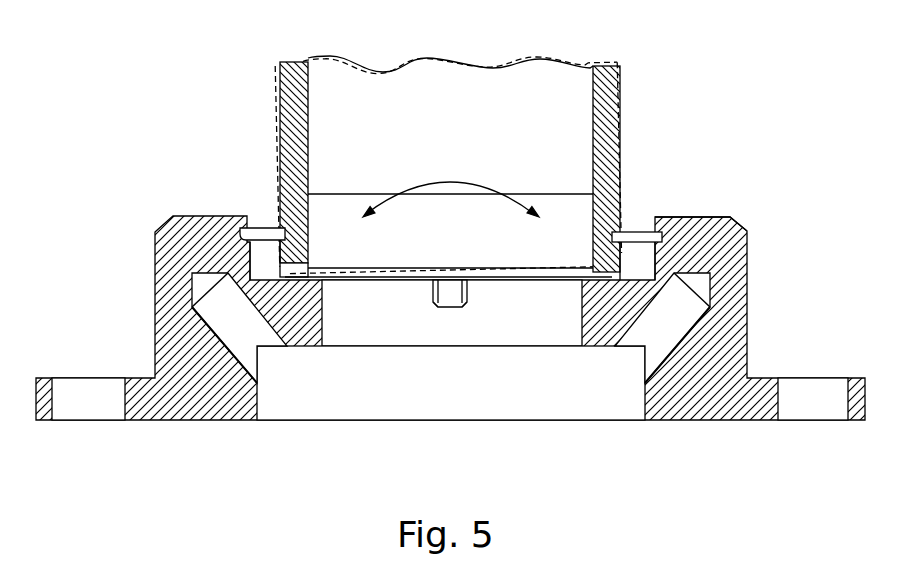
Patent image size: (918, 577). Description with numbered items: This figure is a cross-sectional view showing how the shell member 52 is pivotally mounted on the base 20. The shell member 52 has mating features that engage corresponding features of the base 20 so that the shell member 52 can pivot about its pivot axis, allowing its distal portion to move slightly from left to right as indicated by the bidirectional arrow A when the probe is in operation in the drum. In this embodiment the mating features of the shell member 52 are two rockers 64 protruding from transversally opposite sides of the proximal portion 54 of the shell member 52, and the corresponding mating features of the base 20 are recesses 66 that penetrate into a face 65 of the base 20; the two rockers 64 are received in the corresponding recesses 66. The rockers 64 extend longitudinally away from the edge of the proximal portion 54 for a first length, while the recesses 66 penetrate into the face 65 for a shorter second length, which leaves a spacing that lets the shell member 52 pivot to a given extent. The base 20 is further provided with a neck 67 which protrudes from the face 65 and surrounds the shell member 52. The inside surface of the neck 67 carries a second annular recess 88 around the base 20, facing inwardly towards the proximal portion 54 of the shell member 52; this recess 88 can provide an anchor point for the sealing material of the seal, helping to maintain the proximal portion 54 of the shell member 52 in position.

The base 20 is at (727, 297).
The shell member 52 is at (630, 95).
The proximal portion of the shell member 54 is at (620, 150).
The rockers 64 is at (447, 292).
The face of the base 65 is at (633, 282).
The recesses 66 is at (458, 305).
The neck 67 is at (695, 233).
The second annular recess 88 is at (250, 217).
The bidirectional arrow A is at (451, 185).